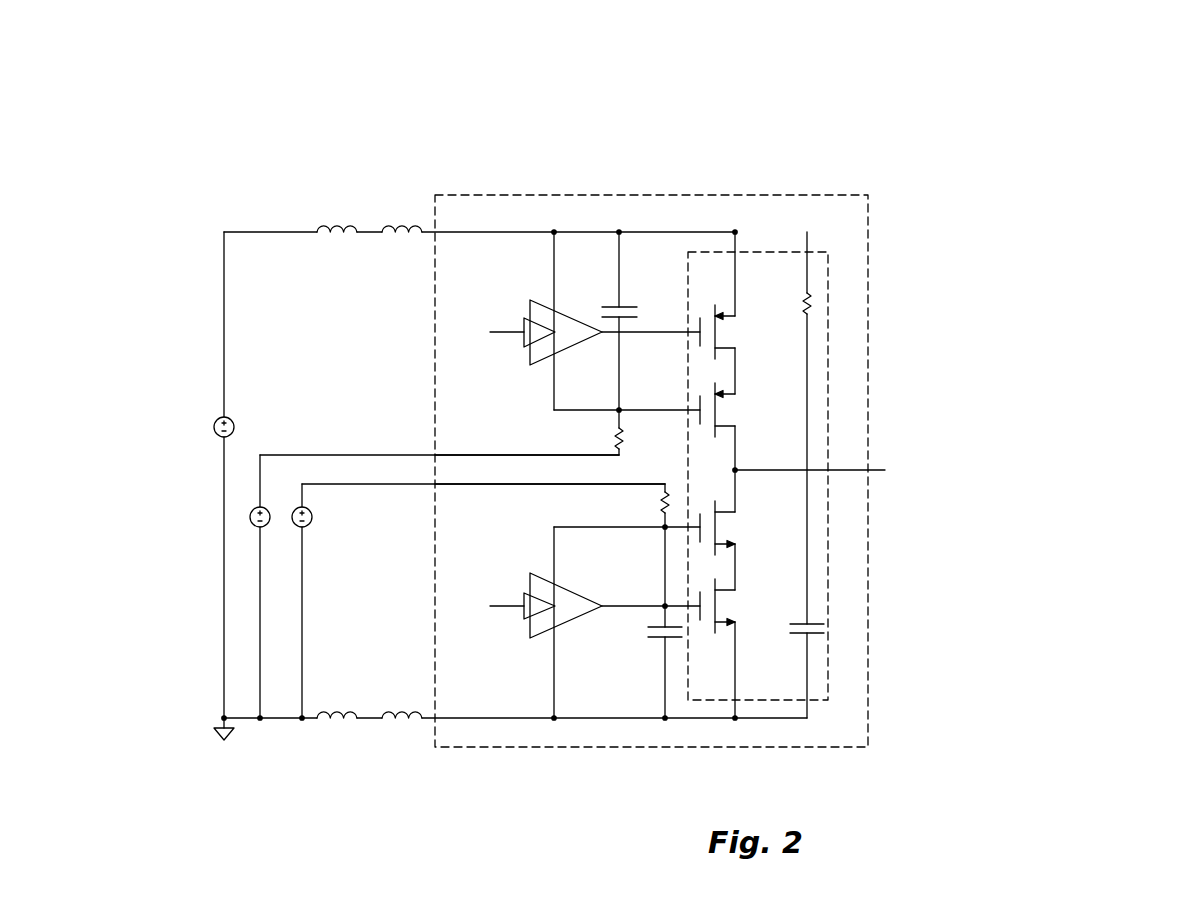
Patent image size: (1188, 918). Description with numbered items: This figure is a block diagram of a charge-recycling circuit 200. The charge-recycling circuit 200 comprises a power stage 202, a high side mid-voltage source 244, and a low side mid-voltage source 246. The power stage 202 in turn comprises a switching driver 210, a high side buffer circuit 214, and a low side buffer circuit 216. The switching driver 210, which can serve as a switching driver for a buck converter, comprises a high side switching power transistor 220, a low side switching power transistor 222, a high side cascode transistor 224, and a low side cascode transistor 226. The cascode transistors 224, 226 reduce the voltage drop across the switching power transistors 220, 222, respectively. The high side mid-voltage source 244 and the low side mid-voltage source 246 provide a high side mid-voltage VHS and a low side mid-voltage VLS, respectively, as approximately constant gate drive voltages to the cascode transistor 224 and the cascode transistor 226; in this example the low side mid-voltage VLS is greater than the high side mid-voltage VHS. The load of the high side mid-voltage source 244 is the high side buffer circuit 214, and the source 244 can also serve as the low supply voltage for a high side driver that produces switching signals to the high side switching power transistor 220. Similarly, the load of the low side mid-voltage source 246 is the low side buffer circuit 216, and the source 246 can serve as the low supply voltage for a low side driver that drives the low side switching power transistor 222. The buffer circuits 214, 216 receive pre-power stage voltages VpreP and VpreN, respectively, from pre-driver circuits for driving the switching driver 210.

The charge-recycling circuit 200 is at (1152, 52).
The power stage 202 is at (500, 748).
The switching driver 210 is at (828, 347).
The high side buffer circuit 214 is at (533, 362).
The low side buffer circuit 216 is at (533, 638).
The high side switching power transistor 220 is at (710, 323).
The low side switching power transistor 222 is at (712, 603).
The high side cascode transistor 224 is at (712, 404).
The low side cascode transistor 226 is at (712, 525).
The high side mid-voltage source 244 is at (250, 512).
The low side mid-voltage source 246 is at (312, 519).